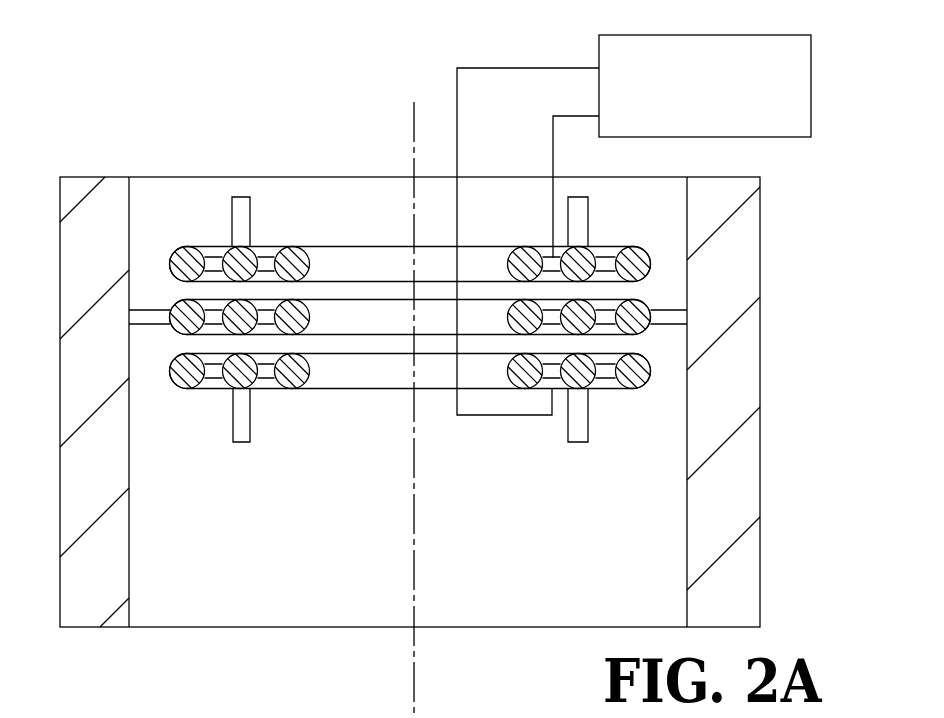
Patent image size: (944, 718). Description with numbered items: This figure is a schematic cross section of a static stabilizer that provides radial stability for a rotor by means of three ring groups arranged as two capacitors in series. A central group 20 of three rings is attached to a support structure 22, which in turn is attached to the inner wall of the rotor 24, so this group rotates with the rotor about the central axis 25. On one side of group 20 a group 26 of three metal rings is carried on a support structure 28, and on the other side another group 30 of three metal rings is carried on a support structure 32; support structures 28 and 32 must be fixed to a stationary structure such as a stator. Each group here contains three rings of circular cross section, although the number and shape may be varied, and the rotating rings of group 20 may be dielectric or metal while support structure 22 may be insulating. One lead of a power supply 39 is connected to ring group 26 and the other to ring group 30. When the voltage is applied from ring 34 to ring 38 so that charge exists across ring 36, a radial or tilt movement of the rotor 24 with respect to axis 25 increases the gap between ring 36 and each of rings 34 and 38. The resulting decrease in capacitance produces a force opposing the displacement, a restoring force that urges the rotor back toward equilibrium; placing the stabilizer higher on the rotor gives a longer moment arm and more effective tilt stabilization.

The group of three rings 20 is at (312, 327).
The support structure 22 is at (143, 308).
The rotor 24 is at (130, 545).
The central axis 25 is at (414, 145).
The group of three metal rings 26 is at (314, 264).
The support structure 28 is at (251, 224).
The group of three metal rings 30 is at (297, 388).
The support structure 32 is at (233, 418).
The ring 34 is at (507, 257).
The ring 36 is at (498, 323).
The ring 38 is at (520, 388).
The power supply 39 is at (782, 138).